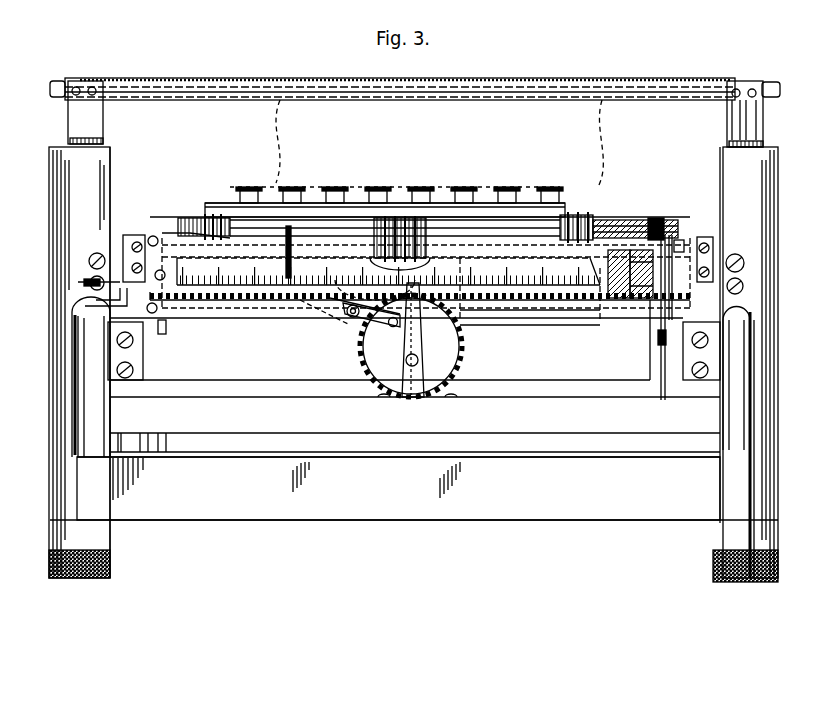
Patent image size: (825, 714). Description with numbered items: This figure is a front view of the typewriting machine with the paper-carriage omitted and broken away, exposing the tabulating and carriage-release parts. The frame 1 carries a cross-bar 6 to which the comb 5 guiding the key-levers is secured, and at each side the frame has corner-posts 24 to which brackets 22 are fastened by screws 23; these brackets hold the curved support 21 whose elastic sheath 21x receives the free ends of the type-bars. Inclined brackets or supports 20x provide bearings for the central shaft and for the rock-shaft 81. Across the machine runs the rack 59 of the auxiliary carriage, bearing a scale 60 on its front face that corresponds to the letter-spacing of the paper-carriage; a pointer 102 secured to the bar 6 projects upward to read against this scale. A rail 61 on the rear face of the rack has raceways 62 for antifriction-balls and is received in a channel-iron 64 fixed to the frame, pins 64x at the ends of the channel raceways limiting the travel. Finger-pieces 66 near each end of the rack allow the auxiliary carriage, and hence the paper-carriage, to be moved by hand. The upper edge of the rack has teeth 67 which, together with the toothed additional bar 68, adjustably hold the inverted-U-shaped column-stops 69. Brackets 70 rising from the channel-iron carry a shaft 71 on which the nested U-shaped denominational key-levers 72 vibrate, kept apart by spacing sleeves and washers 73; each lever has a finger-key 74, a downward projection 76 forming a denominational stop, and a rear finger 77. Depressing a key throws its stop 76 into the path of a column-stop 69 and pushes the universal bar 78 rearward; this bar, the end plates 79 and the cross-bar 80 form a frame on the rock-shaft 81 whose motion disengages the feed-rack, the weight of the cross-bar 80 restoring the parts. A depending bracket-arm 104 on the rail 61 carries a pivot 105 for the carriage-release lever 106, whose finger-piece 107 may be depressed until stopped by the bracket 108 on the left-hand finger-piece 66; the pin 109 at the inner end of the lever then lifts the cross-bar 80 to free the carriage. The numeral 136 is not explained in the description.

The frame 1 is at (398, 488).
The comb 5 is at (152, 438).
The cross-bar 6 is at (414, 373).
The inclined brackets or supports 20x is at (172, 232).
The curved support 21 is at (62, 82).
The elastic sheath 21x is at (133, 84).
The brackets 22 is at (762, 112).
The screws 23 is at (88, 143).
The corner-posts 24 is at (52, 178).
The rack 59 is at (258, 301).
The scale 60 is at (470, 281).
The rail 61 is at (617, 300).
The raceways 62 is at (628, 300).
The channel-iron 64 is at (672, 240).
The pins 64x is at (108, 250).
The finger-piece 66 is at (127, 235).
The teeth 67 is at (222, 218).
The additional bar 68 is at (411, 346).
The column-stops 69 is at (292, 276).
The brackets 70 is at (185, 224).
The shaft 71 is at (632, 229).
The denominational key-levers 72 is at (310, 205).
The spacing sleeves and washers 73 is at (262, 216).
The finger-key 74 is at (492, 190).
The projection 76 is at (382, 218).
The finger 77 is at (358, 279).
The universal bar 78 is at (663, 240).
The end plates 79 is at (679, 246).
The cross-bar 80 is at (508, 312).
The rock-shaft 81 is at (579, 330).
The pointer 102 is at (416, 340).
The depending bracket-arm 104 is at (341, 314).
The pivot 105 is at (358, 318).
The carriage-release lever 106 is at (317, 306).
The finger-piece 107 is at (78, 283).
The bracket 108 is at (112, 318).
The pin 109 is at (394, 330).
The space 136 is at (516, 135).